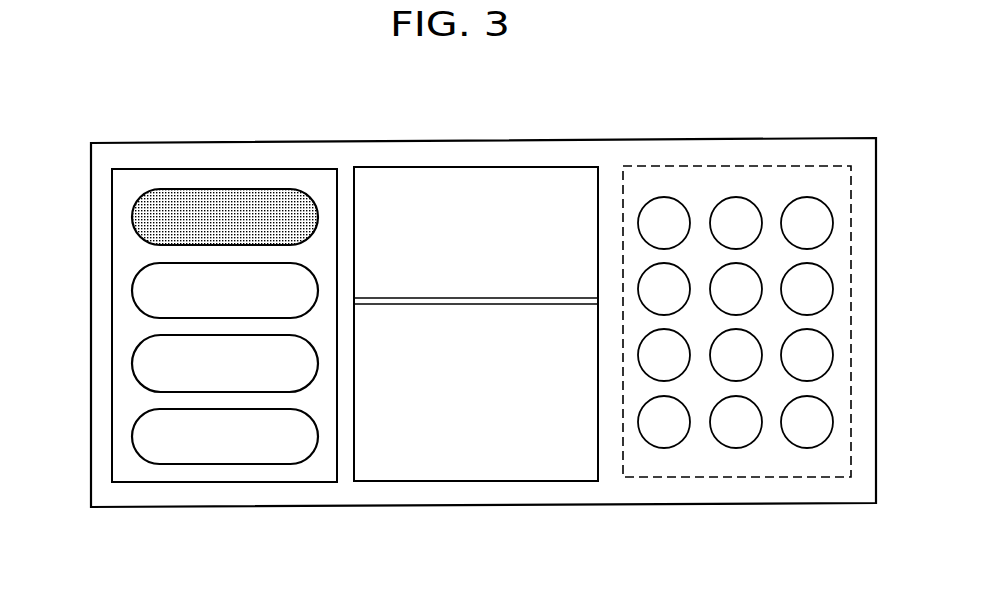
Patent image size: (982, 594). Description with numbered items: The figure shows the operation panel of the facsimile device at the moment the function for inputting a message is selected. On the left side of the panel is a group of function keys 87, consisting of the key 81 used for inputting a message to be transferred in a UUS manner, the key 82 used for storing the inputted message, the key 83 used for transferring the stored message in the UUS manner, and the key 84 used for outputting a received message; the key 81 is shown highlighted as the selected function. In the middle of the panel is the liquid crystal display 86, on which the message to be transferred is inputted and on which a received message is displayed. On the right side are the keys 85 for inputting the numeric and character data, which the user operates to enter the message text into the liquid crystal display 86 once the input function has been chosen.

The key for inputting a message 81 is at (132, 217).
The key for storing the inputted message 82 is at (132, 290).
The key for transferring the stored message 83 is at (132, 363).
The key for outputting the received message 84 is at (132, 437).
The keys for inputting numeric and character data 85 is at (745, 166).
The liquid crystal display 86 is at (475, 167).
The function button panel 87 is at (223, 168).